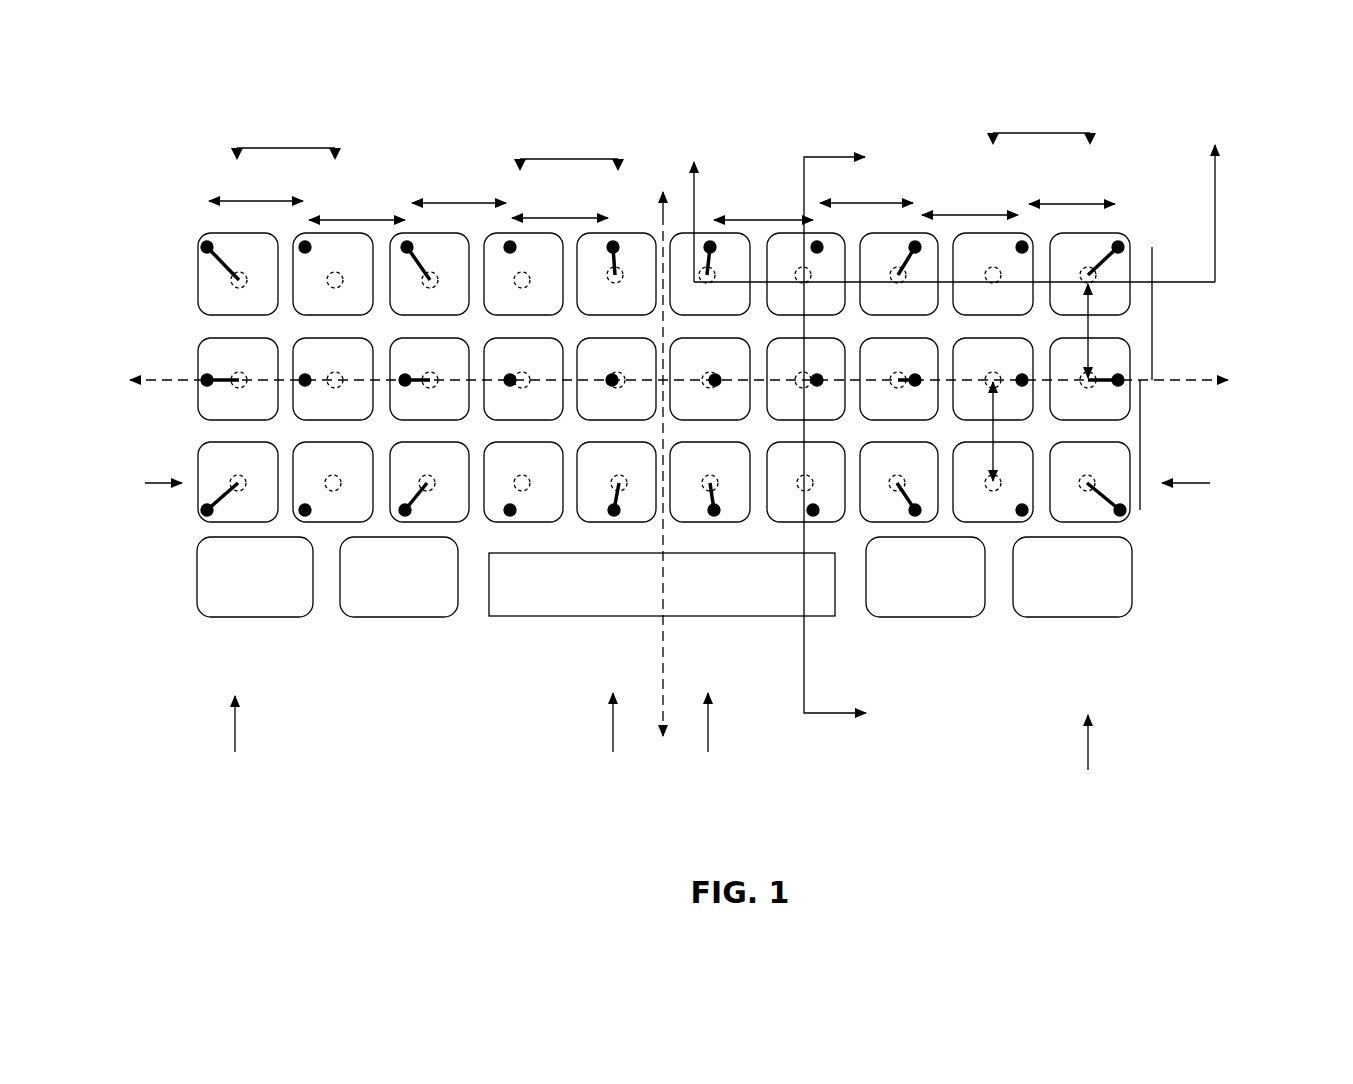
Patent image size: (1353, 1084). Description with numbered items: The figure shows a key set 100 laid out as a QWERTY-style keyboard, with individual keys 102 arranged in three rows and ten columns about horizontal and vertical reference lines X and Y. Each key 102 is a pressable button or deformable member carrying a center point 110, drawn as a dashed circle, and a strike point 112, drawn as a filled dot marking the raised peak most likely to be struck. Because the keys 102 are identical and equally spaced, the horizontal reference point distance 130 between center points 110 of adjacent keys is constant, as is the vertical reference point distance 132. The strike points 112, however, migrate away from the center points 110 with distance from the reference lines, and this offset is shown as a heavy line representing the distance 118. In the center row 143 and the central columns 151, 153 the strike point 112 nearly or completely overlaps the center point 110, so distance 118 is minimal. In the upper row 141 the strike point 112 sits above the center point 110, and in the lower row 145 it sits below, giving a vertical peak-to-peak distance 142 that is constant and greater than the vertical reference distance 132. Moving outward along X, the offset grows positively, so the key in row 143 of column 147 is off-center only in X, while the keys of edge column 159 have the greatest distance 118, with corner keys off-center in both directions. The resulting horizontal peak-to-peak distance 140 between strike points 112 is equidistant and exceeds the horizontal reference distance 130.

The key set 100 is at (208, 656).
The key 102 is at (347, 507).
The center point 110 is at (236, 283).
The strike point 112 is at (205, 243).
The distance 118 is at (222, 262).
The horizontal reference point distance 130 is at (263, 147).
The vertical reference point distance 132 is at (1086, 332).
The horizontal peak-to-peak distance 140 is at (262, 200).
The row 141 is at (190, 270).
The vertical peak-to-peak distance 142 is at (1154, 330).
The row 143 is at (190, 367).
The row 145 is at (676, 482).
The column 147 is at (235, 735).
The column 151 is at (613, 734).
The column 153 is at (710, 734).
The edge column 159 is at (1088, 757).